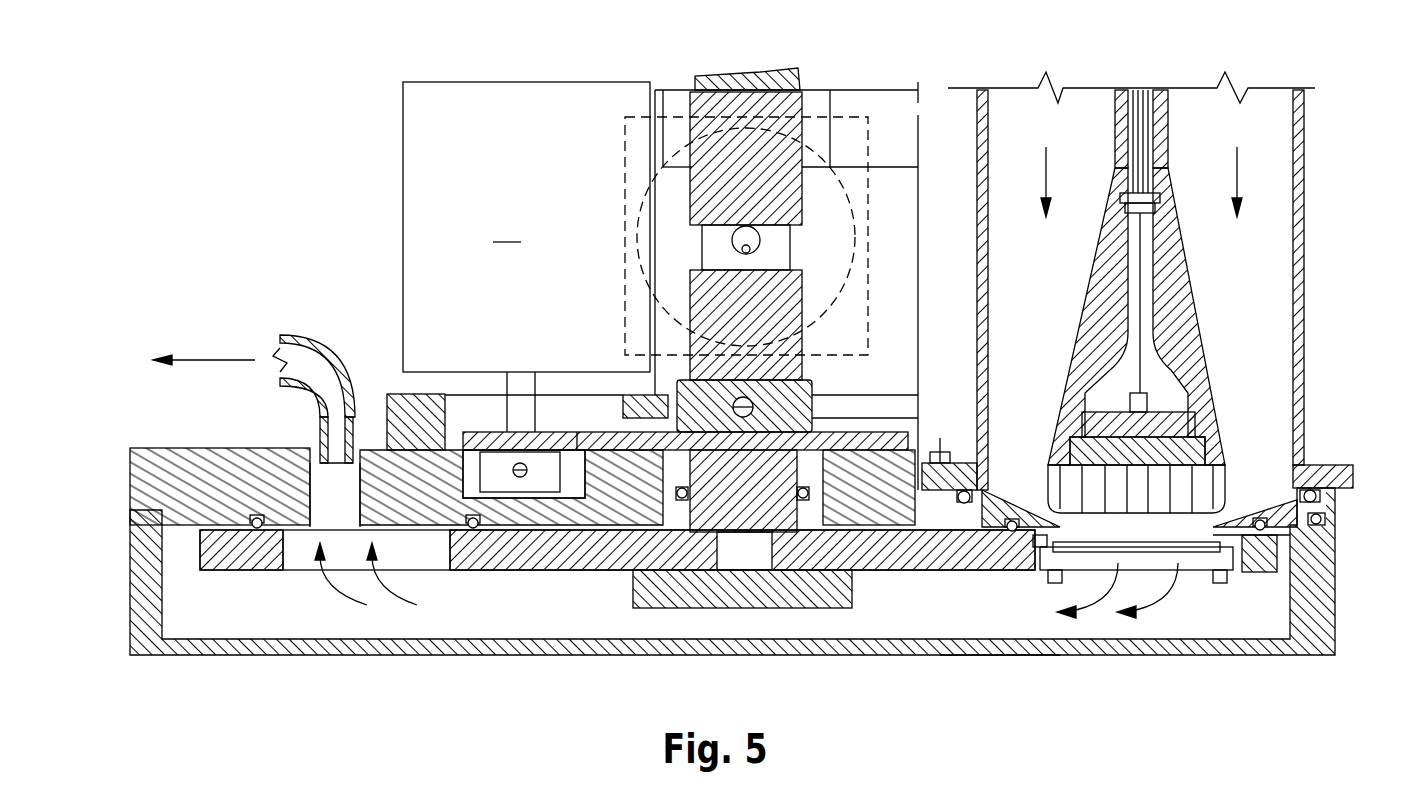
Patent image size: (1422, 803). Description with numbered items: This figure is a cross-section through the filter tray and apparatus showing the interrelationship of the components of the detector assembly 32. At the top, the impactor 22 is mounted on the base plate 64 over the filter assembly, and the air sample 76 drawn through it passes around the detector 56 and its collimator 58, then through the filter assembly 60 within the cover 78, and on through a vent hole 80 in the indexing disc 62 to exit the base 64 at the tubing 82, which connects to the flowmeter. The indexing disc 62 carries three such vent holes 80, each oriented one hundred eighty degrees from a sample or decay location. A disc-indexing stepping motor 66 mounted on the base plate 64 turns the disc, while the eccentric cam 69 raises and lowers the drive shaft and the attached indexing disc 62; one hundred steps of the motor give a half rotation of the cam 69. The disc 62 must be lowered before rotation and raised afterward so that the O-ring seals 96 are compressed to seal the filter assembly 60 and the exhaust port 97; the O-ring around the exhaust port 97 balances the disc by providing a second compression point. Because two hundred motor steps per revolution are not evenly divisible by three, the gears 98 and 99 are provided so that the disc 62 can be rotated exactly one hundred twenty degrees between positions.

The detector assembly 32 is at (1281, 19).
The disc-indexing stepping motor 66 is at (825, 188).
The eccentric cam 69 is at (757, 238).
The air sample 76 is at (200, 358).
The impactor 22 is at (1300, 258).
The detector 56 is at (1210, 438).
The collimator 58 is at (1210, 487).
The O-ring seals 96 is at (253, 518).
The filter assembly 60 is at (1263, 603).
The base plate 64 is at (150, 448).
The tubing 82 is at (318, 343).
The exhaust port 97 is at (317, 475).
The vent hole 80 is at (283, 543).
The indexing disc 62 is at (565, 563).
The gear 99 is at (562, 452).
The gear 98 is at (630, 448).
The cover 78 is at (990, 653).